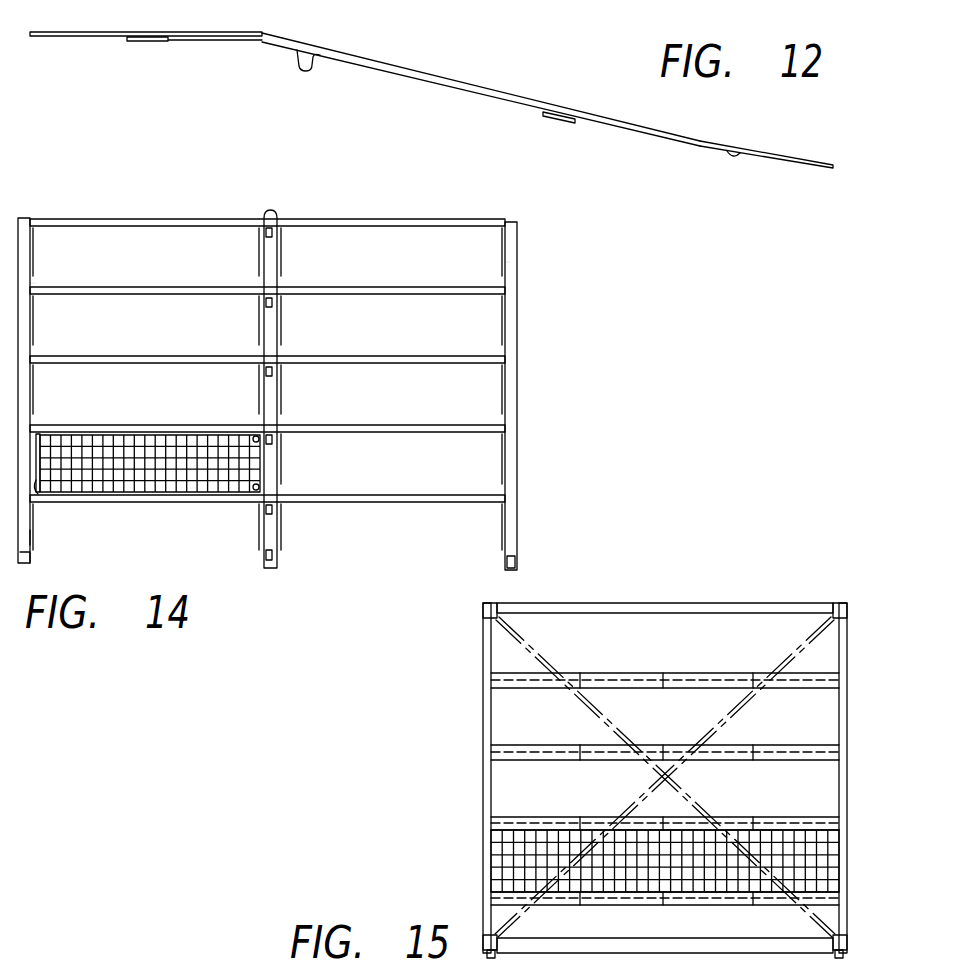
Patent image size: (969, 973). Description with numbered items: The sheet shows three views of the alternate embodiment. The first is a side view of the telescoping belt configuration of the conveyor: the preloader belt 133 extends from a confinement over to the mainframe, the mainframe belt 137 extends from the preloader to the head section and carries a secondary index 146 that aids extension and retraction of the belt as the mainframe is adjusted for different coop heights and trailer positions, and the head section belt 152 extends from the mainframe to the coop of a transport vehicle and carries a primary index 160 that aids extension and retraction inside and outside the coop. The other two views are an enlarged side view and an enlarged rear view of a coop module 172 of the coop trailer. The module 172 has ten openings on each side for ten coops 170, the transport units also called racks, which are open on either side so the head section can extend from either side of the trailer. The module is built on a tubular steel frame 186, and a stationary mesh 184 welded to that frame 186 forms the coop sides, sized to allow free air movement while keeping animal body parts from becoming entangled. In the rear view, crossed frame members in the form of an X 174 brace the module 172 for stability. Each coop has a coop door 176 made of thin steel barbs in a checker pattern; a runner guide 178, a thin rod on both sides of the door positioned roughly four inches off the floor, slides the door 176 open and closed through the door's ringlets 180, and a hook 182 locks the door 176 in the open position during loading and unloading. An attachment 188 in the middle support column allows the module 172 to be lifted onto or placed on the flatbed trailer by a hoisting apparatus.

In FIG. 12, the preloader belt 133 is at (839, 135).
In FIG. 12, the mainframe belt 137 is at (701, 124).
In FIG. 12, the secondary index 146 is at (696, 167).
In FIG. 12, the head section belt 152 is at (262, 14).
In FIG. 12, the primary index 160 is at (168, 60).
In FIG. 14, the coops 170 is at (150, 237).
In FIG. 15, the coops 170 is at (500, 655).
In FIG. 14, the coop module 172 is at (52, 200).
In FIG. 15, the coop module 172 is at (797, 600).
In FIG. 15, the crossed frame members in the form of an X 174 is at (620, 745).
In FIG. 14, the coop door 176 is at (40, 497).
In FIG. 14, the runner guide 178 is at (40, 537).
In FIG. 14, the ringlets 180 is at (40, 432).
In FIG. 14, the hook 182 is at (140, 432).
In FIG. 15, the mesh 184 is at (795, 836).
In FIG. 14, the tubular steel frame 186 is at (30, 285).
In FIG. 15, the tubular steel frame 186 is at (692, 605).
In FIG. 14, the attachment 188 is at (272, 215).